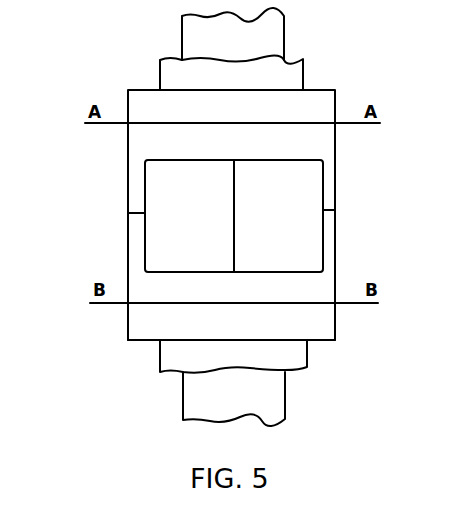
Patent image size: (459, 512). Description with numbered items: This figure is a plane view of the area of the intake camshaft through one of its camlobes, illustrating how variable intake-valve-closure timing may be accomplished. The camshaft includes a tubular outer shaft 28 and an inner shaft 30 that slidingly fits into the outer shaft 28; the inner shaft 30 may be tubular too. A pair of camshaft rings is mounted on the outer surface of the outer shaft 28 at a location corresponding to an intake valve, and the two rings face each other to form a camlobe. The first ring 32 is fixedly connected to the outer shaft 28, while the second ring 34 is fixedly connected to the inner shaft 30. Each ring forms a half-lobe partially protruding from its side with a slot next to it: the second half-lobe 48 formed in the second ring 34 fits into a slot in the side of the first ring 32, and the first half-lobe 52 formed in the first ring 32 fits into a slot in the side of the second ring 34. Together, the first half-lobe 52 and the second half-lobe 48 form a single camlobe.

The first ring 32 is at (305, 105).
The second half-lobe 48 is at (159, 194).
The first half-lobe 52 is at (313, 192).
The second ring 34 is at (148, 322).
The outer shaft 28 is at (303, 355).
The inner shaft 30 is at (265, 398).